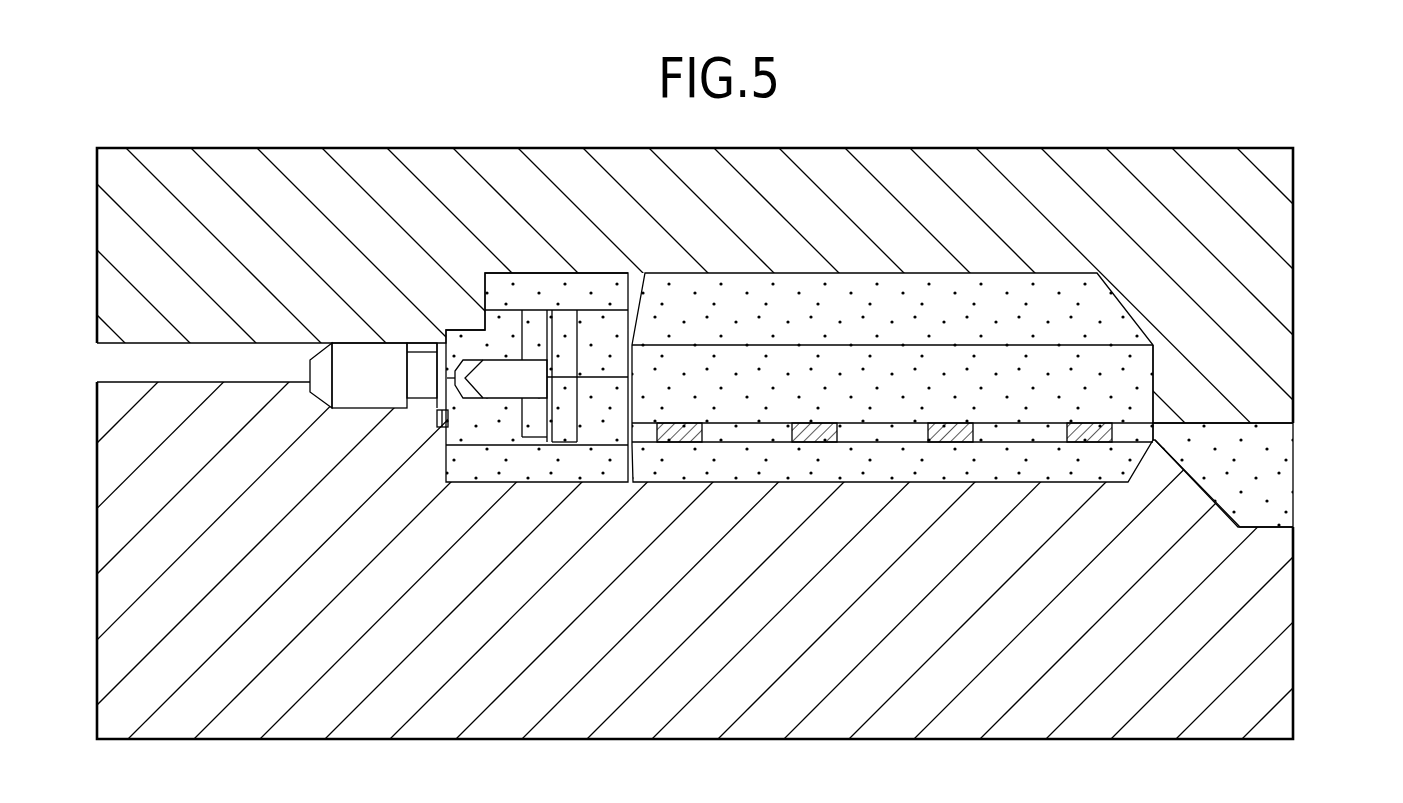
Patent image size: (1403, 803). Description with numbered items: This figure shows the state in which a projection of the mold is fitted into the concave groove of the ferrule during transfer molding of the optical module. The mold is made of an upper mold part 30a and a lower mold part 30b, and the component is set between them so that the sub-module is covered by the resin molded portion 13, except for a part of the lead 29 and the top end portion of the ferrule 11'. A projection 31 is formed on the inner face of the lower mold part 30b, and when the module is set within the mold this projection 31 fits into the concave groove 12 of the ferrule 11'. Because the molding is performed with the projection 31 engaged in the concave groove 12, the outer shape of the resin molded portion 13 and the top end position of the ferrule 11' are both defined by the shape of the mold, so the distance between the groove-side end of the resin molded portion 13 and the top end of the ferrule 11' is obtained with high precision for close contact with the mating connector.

The ferrule 11' is at (358, 249).
The concave groove 12 is at (418, 342).
The resin molded portion 13 is at (945, 297).
The lead 29 is at (815, 443).
The upper mold part 30a is at (1265, 293).
The lower mold part 30b is at (1265, 632).
The projection 31 is at (418, 400).